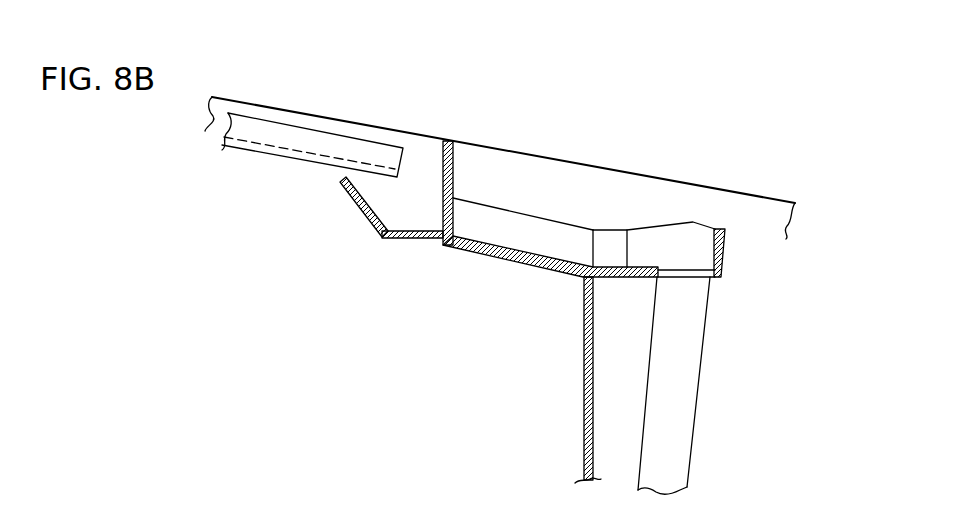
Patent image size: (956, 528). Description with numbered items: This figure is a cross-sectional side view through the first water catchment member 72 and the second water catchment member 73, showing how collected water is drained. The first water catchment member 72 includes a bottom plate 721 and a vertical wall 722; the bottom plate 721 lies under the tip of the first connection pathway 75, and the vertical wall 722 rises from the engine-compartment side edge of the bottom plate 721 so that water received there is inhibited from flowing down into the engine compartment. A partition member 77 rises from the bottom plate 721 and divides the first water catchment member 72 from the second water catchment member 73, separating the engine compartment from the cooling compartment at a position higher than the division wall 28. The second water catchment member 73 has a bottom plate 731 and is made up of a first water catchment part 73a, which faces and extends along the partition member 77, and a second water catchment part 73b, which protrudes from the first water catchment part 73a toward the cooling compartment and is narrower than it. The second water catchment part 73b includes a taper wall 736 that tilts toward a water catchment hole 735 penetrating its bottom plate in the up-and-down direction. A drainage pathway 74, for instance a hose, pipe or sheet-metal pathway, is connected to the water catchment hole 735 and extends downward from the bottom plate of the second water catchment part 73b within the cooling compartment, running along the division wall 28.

The division wall 28 is at (593, 405).
The first water catchment member 72 is at (353, 264).
The bottom plate 721 is at (415, 238).
The vertical wall 722 is at (360, 208).
The second water catchment member 73 is at (654, 238).
The bottom plate 731 is at (507, 250).
The first water catchment part 73a is at (540, 228).
The second water catchment part 73b is at (640, 255).
The water catchment hole 735 is at (683, 272).
The taper wall 736 is at (724, 245).
The drainage pathway 74 is at (690, 347).
The first connection pathway 75 is at (352, 155).
The partition member 77 is at (437, 162).